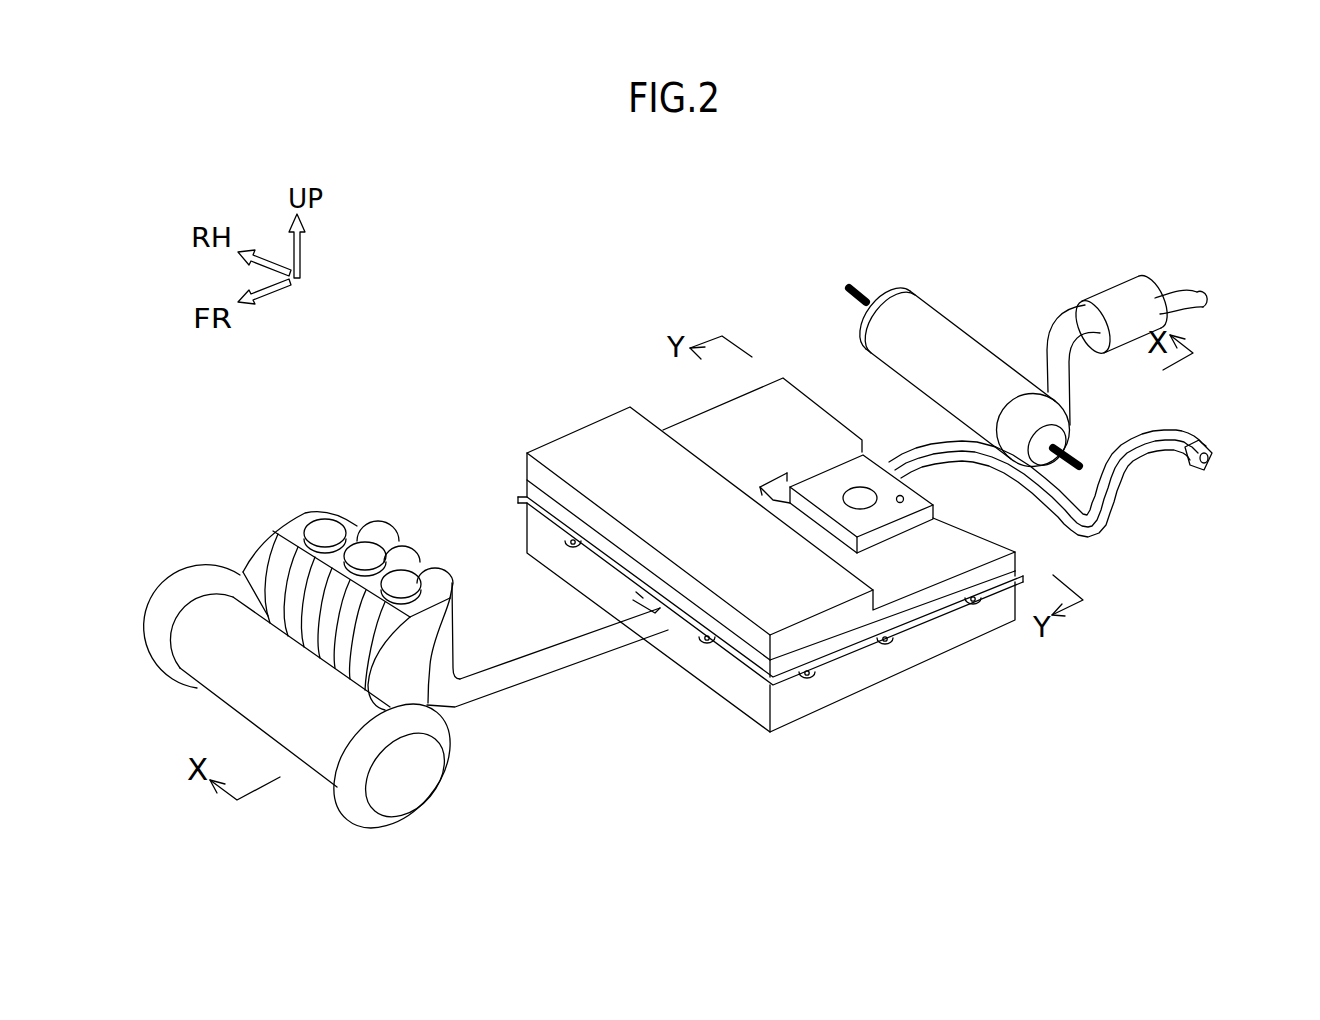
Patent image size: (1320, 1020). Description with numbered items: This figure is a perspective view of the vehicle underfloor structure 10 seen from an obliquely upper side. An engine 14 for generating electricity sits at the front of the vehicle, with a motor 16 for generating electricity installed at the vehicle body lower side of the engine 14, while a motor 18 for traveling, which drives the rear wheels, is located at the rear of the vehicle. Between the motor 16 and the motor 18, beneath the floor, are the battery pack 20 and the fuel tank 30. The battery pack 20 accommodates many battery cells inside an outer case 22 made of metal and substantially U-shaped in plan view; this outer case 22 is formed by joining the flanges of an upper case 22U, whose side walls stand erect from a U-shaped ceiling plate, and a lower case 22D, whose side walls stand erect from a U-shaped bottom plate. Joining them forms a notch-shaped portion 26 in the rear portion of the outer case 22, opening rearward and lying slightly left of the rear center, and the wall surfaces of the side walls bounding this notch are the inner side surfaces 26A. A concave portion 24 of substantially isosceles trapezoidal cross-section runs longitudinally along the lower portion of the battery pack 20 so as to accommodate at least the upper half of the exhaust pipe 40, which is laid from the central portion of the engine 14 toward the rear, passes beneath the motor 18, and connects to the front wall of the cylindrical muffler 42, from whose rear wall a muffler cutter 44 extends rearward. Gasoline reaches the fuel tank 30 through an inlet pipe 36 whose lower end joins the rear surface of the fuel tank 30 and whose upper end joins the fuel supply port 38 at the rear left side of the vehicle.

The vehicle underfloor structure 10 is at (982, 505).
The engine 14 is at (380, 530).
The motor for generating electricity 16 is at (233, 687).
The motor for traveling 18 is at (933, 330).
The battery pack 20 is at (809, 548).
The outer case 22 is at (809, 587).
The upper case 22U is at (937, 588).
The lower case 22D is at (823, 708).
The concave portion 24 is at (665, 633).
The notch-shaped portion 26 is at (810, 467).
The inner side surfaces 26A is at (787, 485).
The fuel tank 30 is at (883, 457).
The inlet pipe 36 is at (1133, 500).
The fuel supply port 38 is at (1207, 445).
The exhaust pipe 40 is at (528, 677).
The muffler 42 is at (1117, 290).
The muffler cutter 44 is at (1187, 293).